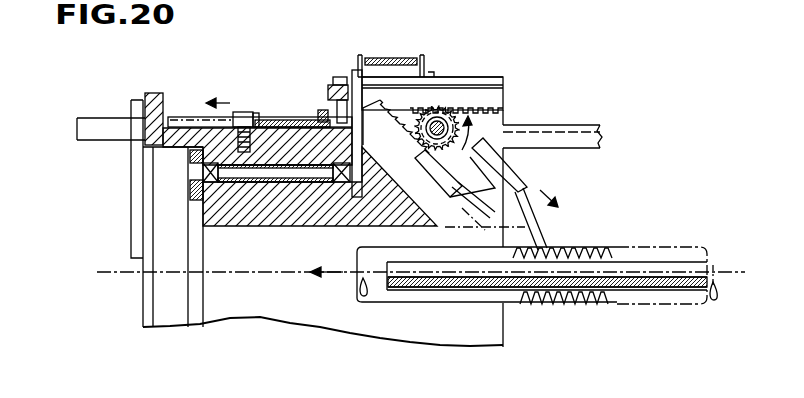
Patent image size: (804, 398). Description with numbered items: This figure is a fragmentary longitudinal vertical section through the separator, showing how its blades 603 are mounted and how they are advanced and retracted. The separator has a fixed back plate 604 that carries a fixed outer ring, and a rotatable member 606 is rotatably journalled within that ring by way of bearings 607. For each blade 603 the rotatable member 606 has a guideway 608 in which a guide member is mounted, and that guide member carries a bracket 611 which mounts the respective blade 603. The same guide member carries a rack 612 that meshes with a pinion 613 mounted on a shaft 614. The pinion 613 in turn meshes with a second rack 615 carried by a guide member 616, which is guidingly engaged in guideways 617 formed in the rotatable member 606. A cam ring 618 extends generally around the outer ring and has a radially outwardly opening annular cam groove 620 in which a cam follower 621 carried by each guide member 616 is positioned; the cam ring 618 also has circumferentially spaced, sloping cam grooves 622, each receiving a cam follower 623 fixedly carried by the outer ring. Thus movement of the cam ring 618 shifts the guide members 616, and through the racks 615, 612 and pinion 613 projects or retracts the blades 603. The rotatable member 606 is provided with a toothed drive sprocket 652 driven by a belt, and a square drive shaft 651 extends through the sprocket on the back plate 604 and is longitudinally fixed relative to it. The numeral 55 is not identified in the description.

The square drive shaft 651 is at (93, 118).
The fixed back plate 604 is at (145, 297).
The bearings 607 is at (192, 190).
The rotatable member 606 is at (236, 212).
The guideway 608 is at (415, 190).
The cam ring 618 is at (233, 112).
The cam follower 623 is at (246, 110).
The cam grooves 622 is at (256, 112).
The cam follower 621 is at (330, 112).
The annular cam groove 620 is at (330, 113).
The toothed drive sprocket 652 is at (393, 37).
The rack 612 is at (403, 103).
The guideways 617 is at (467, 82).
The guide member 616 is at (505, 88).
The rack 615 is at (507, 111).
The pinion 613 is at (460, 120).
The shaft 614 is at (432, 135).
The bracket 611 is at (480, 176).
The blades 603 is at (540, 230).
The drive shaft 55 is at (458, 283).